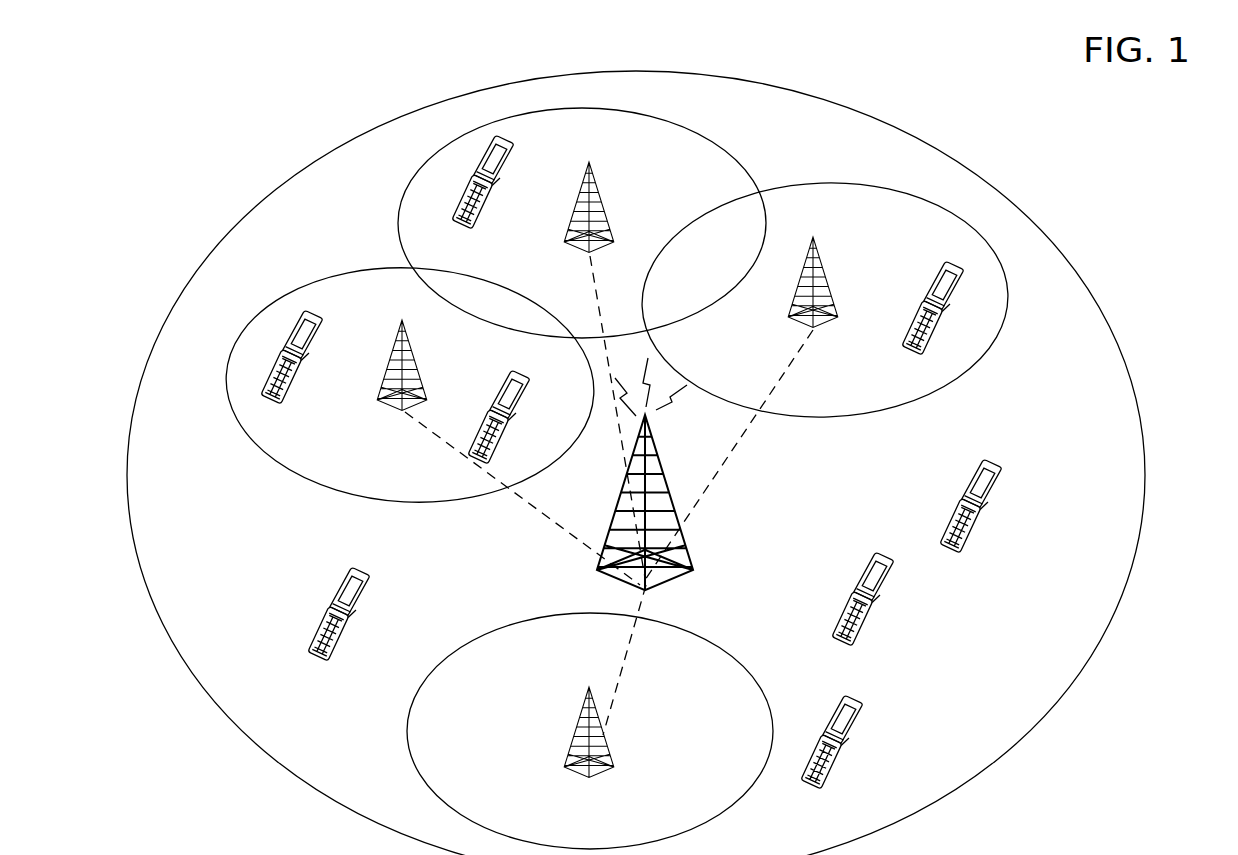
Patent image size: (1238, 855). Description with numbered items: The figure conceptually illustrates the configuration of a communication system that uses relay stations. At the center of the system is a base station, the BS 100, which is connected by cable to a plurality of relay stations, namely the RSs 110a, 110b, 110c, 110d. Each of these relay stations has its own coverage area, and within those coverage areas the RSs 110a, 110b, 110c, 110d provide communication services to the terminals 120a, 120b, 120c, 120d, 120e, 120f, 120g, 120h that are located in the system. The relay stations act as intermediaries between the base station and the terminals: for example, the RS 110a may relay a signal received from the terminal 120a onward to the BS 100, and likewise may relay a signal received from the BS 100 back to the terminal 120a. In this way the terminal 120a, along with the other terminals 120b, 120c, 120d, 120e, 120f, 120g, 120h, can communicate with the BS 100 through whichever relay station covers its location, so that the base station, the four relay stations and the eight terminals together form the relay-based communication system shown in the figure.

The BS 100 is at (697, 563).
The RS 110a is at (397, 413).
The RS 110b is at (613, 207).
The RS 110c is at (833, 283).
The RS 110d is at (613, 755).
The terminal 120a is at (297, 380).
The terminal 120b is at (484, 422).
The terminal 120c is at (493, 203).
The terminal 120d is at (905, 343).
The terminal 120e is at (978, 528).
The terminal 120f is at (868, 620).
The terminal 120g is at (838, 770).
The terminal 120h is at (315, 645).